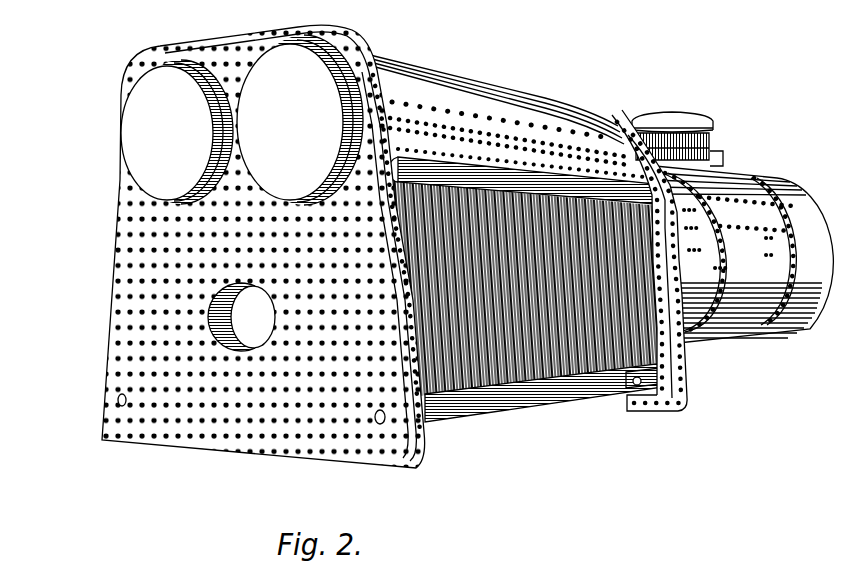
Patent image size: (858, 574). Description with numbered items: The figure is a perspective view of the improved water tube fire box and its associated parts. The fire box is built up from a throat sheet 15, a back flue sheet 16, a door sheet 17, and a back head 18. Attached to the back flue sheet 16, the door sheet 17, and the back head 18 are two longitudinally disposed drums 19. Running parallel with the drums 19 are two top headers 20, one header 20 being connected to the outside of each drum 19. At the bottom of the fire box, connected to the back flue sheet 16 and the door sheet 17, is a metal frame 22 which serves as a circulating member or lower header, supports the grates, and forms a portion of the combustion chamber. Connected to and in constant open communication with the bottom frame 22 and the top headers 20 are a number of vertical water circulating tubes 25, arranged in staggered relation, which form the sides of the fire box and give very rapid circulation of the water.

The throat sheet 15 is at (683, 348).
The back flue sheet 16 is at (663, 388).
The door sheet 17 is at (427, 433).
The back head 18 is at (143, 318).
The drums 19 is at (242, 120).
The top headers 20 is at (538, 178).
The metal frame 22 is at (517, 403).
The vertical water circulating tubes 25 is at (560, 350).